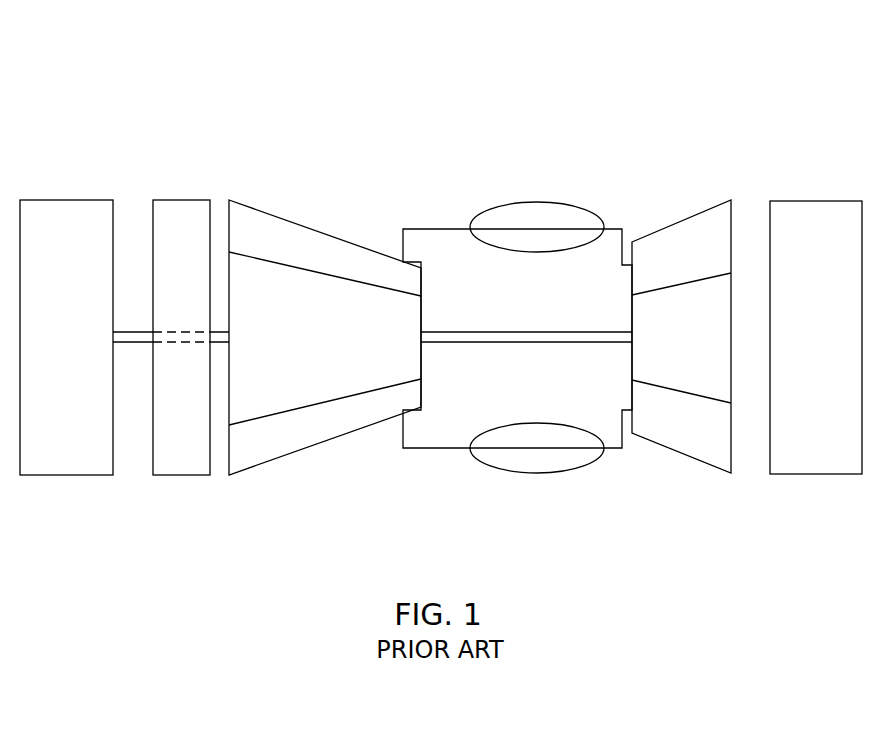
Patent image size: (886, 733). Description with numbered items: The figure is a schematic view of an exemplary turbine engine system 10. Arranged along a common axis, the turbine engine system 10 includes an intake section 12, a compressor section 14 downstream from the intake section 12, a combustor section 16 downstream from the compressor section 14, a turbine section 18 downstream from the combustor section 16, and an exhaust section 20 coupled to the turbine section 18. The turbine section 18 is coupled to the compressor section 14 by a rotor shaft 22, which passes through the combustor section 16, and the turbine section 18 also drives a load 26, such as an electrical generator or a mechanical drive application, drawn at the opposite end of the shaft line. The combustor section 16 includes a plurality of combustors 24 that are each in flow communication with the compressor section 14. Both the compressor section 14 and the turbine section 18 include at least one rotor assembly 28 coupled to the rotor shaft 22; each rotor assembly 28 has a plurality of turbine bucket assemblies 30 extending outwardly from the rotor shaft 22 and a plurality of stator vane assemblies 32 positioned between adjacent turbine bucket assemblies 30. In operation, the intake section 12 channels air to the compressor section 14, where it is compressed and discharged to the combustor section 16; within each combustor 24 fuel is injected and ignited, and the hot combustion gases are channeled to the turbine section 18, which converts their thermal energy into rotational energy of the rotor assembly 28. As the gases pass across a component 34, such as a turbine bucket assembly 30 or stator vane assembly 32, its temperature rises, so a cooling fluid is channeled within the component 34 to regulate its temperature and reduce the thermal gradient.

The turbine engine system 10 is at (202, 70).
The intake section 12 is at (182, 200).
The compressor section 14 is at (309, 228).
The combustor section 16 is at (610, 172).
The turbine section 18 is at (719, 200).
The exhaust section 20 is at (815, 200).
The rotor shaft 22 is at (543, 332).
The combustor 24 is at (555, 202).
The load 26 is at (67, 200).
The rotor assembly 28 is at (428, 297).
The turbine bucket assembly 30 is at (670, 238).
The stator vane assembly 32 is at (710, 445).
The component 34 is at (667, 418).